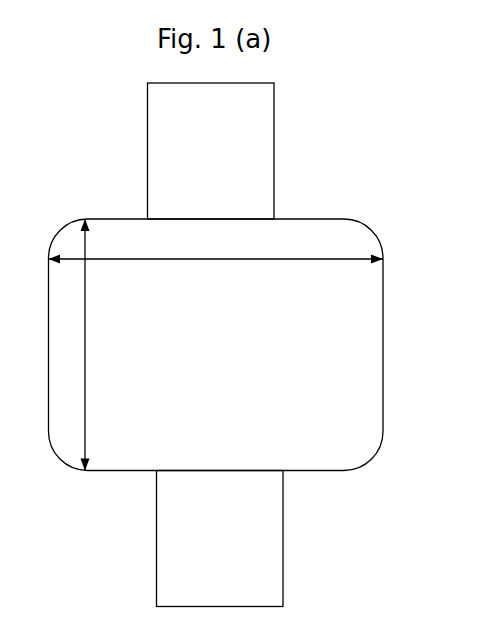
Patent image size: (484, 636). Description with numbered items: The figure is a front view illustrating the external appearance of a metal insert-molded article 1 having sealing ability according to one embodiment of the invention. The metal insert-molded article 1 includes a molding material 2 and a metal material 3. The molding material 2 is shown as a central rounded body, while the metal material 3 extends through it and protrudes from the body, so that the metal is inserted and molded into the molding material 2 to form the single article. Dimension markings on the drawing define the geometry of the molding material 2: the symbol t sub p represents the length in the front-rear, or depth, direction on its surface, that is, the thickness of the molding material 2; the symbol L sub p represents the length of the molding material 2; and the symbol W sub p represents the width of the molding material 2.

The metal insert-molded article 1 is at (334, 144).
The molding material 2 is at (336, 312).
The metal material 3 is at (244, 518).